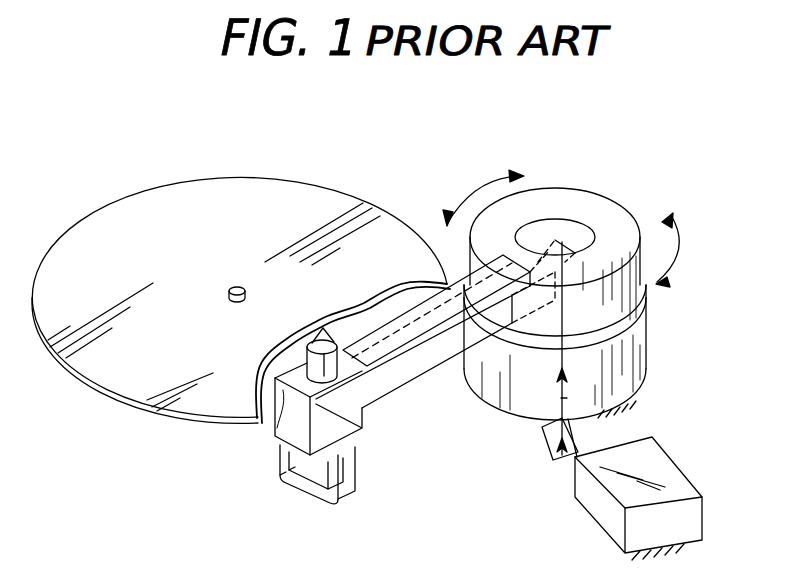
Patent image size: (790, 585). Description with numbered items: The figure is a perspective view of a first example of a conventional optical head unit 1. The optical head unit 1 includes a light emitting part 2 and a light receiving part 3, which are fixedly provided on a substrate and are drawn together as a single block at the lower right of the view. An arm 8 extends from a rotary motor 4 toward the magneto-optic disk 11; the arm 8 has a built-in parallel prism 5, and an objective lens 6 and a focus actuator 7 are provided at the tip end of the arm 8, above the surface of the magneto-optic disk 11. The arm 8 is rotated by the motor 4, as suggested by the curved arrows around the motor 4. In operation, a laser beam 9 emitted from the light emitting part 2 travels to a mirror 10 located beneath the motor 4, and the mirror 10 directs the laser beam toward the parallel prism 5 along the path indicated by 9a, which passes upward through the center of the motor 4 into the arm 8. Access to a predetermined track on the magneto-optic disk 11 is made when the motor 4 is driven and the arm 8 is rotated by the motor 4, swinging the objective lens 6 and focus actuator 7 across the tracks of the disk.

The optical head unit 1 is at (518, 122).
The light emitting part 2 is at (655, 482).
The light receiving part 3 is at (680, 467).
The motor 4 is at (630, 207).
The parallel prism 5 is at (406, 372).
The objective lens 6 is at (274, 424).
The focus actuator 7 is at (280, 468).
The arm 8 is at (402, 407).
The laser beam 9 is at (565, 462).
The directed laser beam 9a is at (568, 393).
The mirror 10 is at (541, 434).
The magneto-optic disk 11 is at (306, 179).